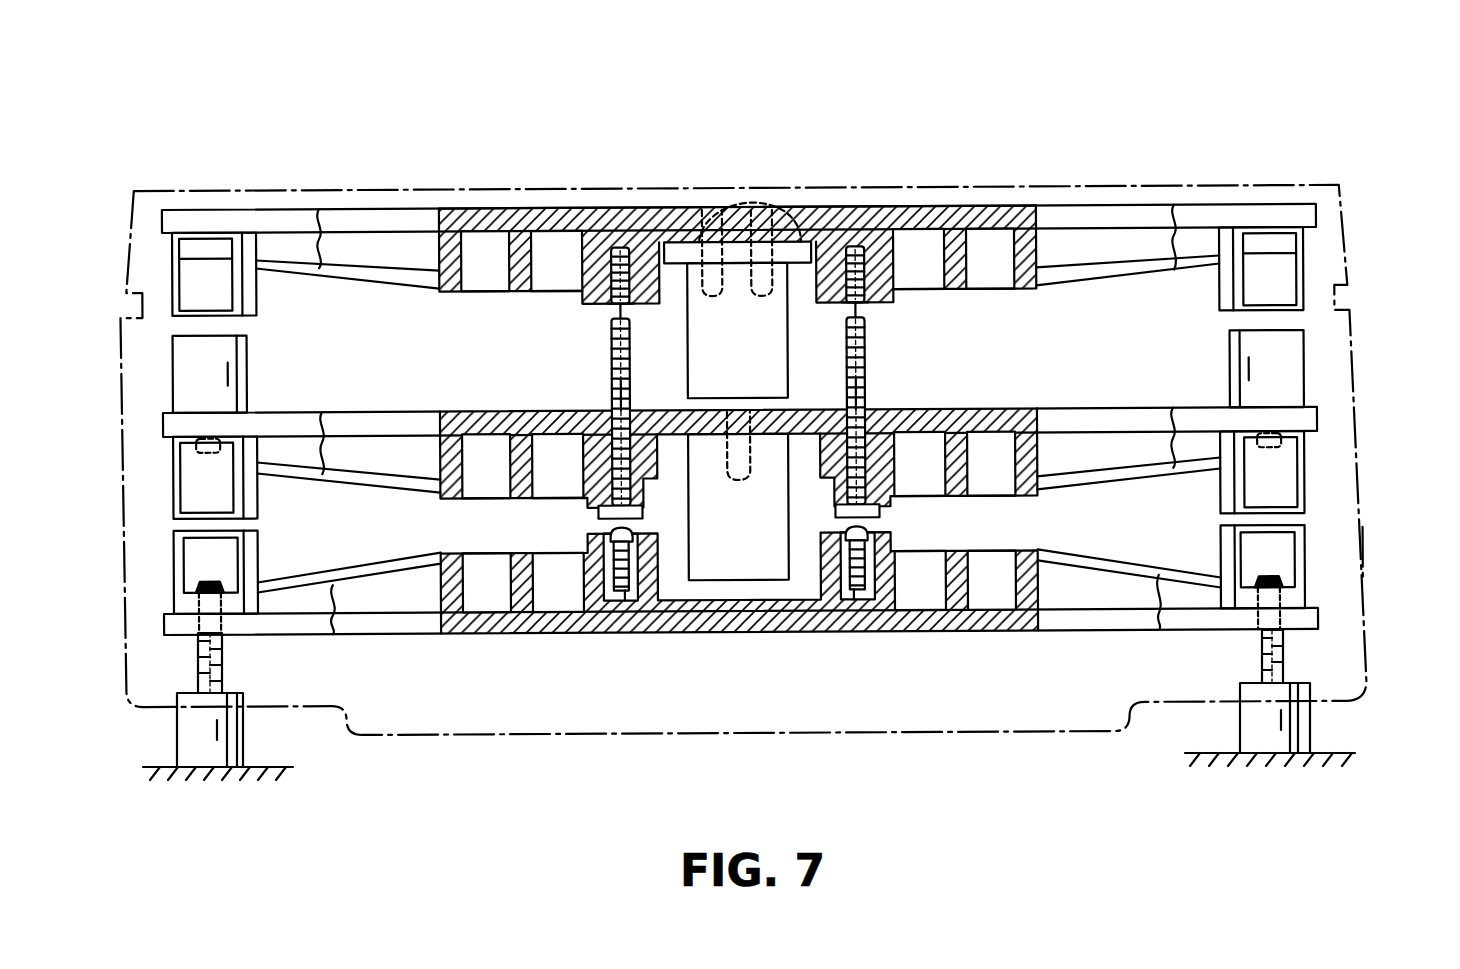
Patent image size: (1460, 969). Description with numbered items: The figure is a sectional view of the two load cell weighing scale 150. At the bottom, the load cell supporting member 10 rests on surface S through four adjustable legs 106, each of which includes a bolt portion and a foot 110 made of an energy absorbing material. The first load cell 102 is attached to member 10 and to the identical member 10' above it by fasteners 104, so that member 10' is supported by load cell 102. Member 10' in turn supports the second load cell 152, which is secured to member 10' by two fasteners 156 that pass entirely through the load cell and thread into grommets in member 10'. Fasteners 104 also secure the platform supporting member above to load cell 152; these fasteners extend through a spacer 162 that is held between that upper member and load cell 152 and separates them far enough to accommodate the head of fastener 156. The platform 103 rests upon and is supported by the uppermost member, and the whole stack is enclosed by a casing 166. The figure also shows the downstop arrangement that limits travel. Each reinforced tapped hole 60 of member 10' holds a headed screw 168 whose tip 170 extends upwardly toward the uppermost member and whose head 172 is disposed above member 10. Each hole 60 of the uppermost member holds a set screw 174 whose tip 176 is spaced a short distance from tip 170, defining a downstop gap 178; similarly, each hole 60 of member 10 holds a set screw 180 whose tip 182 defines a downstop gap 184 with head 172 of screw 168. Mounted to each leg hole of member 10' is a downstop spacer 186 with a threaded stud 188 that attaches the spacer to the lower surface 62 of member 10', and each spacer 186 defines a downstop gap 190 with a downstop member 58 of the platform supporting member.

The two load cell weighing scale 150 is at (1126, 154).
The spacer 162 is at (690, 240).
The fasteners 104 is at (740, 207).
The reinforced tapped holes 60 is at (612, 207).
The set screw 174 is at (625, 212).
The platform 103 is at (1007, 206).
The downstop member 58 is at (176, 294).
The downstop gap 190 is at (242, 324).
The downstop spacer 186 is at (176, 380).
The fasteners 156 is at (197, 425).
The threaded stud 188 is at (176, 478).
The lower surface 62 is at (408, 410).
The tip 176 is at (608, 306).
The tip 170 is at (611, 328).
The headed screw 168 is at (611, 398).
The downstop gap 178 is at (630, 310).
The second load cell 152 is at (755, 392).
The head 172 is at (838, 516).
The tip 182 is at (840, 533).
The downstop gap 184 is at (603, 527).
The casing 166 is at (1365, 553).
The foot 110 is at (247, 696).
The adjustable legs 106 is at (259, 740).
The set screw 180 is at (623, 633).
The load cell 102 is at (735, 585).
The load cell supporting member 10 is at (751, 622).
The member 10' is at (802, 411).
The surface S is at (163, 766).